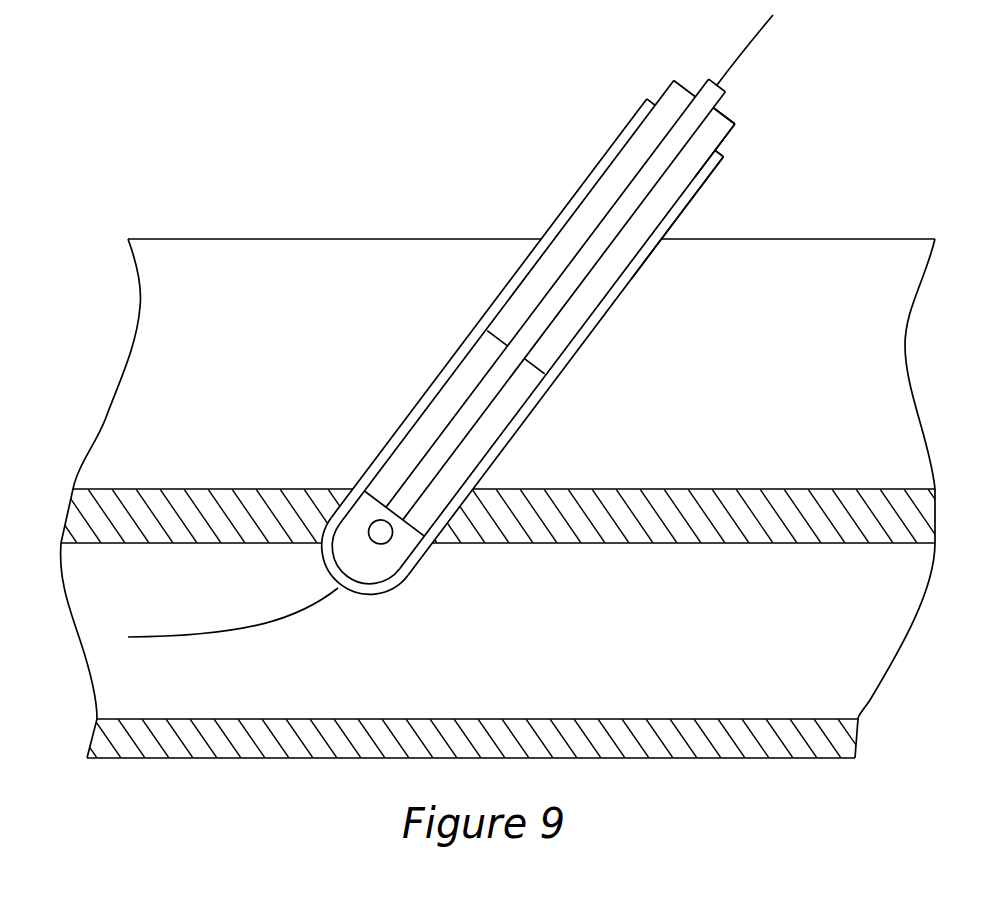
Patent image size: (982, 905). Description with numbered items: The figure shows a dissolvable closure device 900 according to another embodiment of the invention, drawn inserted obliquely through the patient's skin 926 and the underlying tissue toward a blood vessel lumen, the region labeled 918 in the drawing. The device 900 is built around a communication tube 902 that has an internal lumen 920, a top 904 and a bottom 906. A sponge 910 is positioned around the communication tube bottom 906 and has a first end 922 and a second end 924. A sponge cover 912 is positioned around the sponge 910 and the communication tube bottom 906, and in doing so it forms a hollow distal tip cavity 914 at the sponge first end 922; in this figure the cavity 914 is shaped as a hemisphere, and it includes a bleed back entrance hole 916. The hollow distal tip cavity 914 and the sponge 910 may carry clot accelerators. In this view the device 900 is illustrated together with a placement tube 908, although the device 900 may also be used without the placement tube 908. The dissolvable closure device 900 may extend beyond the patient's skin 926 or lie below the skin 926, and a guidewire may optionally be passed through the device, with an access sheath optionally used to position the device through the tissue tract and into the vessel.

The dissolvable closure device 900 is at (543, 338).
The communication tube 902 is at (612, 225).
The top 904 is at (713, 95).
The bottom 906 is at (440, 448).
The placement tube 908 is at (713, 132).
The sponge 910 is at (479, 442).
The sponge cover 912 is at (693, 190).
The hollow distal tip cavity 914 is at (368, 573).
The bleed back entrance hole 916 is at (370, 530).
The vessel lumen 918 is at (718, 646).
The lumen 920 is at (495, 378).
The first end 922 is at (445, 487).
The second end 924 is at (528, 379).
The skin 926 is at (878, 240).